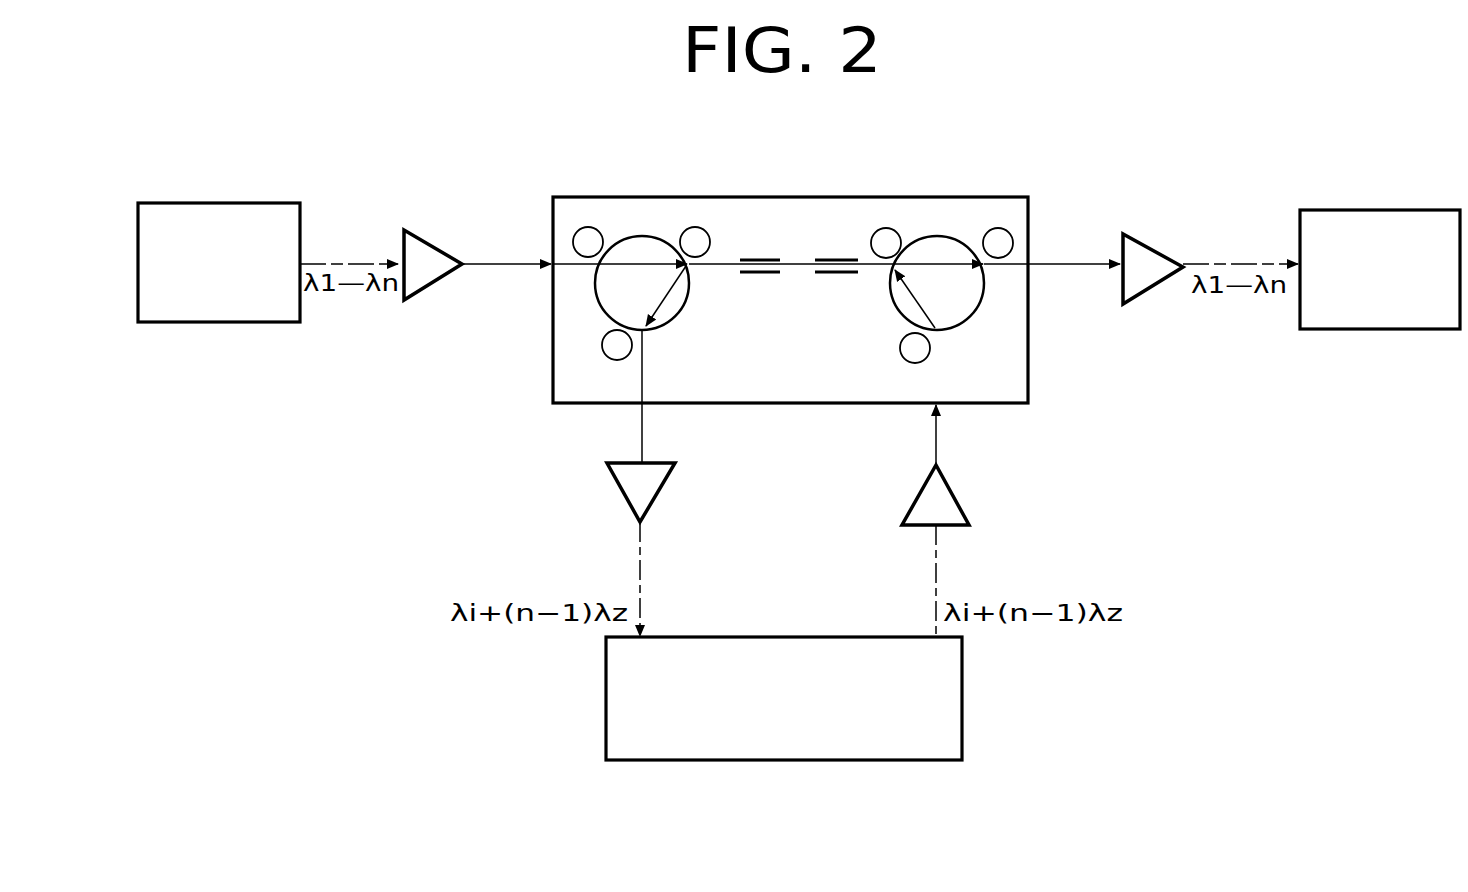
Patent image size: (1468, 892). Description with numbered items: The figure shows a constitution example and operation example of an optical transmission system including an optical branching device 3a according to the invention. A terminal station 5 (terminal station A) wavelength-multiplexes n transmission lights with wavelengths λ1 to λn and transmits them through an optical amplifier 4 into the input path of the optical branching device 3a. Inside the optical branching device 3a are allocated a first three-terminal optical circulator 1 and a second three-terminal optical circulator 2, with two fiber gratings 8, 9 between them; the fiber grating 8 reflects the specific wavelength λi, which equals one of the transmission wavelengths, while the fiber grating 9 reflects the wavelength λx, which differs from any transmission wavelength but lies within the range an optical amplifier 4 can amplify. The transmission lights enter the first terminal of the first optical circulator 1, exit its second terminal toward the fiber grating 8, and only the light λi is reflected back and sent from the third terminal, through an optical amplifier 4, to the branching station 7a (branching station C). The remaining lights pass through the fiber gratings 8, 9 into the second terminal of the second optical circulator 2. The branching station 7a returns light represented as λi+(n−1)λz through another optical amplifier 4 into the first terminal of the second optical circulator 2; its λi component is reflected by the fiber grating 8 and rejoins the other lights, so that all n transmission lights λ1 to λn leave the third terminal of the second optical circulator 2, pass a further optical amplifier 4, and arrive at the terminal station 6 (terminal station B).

The first three-terminal optical circulator 1 is at (642, 236).
The second three-terminal optical circulator 2 is at (937, 236).
The optical branching device 3a is at (800, 197).
The optical amplifier 4 is at (446, 250).
The terminal station 5 is at (218, 203).
The terminal station 6 is at (1380, 210).
The branching station 7a is at (962, 700).
The fiber grating 8 is at (757, 258).
The fiber grating 9 is at (836, 258).